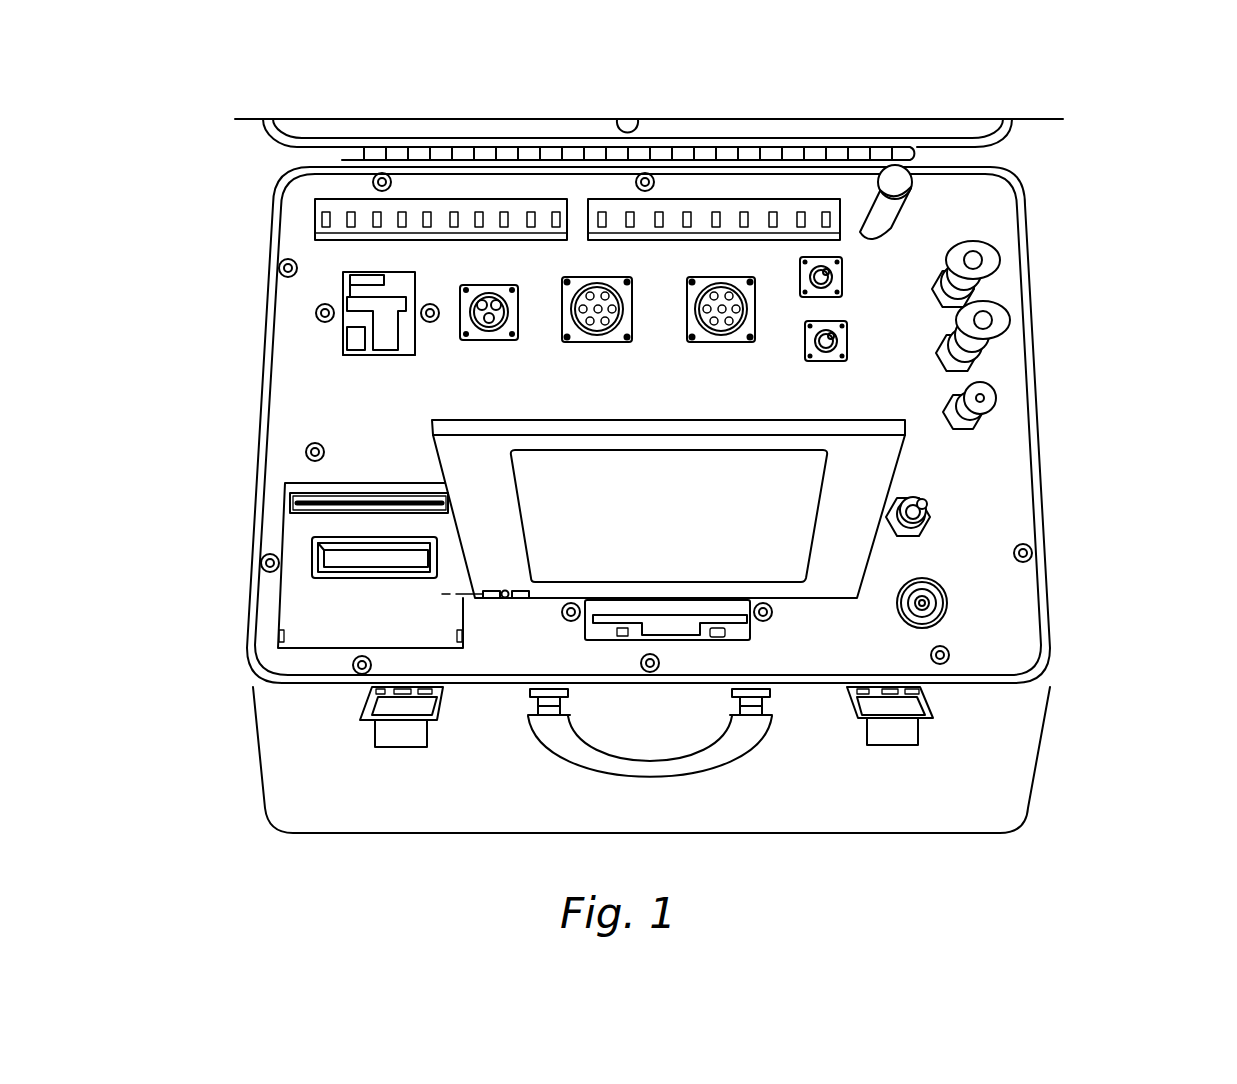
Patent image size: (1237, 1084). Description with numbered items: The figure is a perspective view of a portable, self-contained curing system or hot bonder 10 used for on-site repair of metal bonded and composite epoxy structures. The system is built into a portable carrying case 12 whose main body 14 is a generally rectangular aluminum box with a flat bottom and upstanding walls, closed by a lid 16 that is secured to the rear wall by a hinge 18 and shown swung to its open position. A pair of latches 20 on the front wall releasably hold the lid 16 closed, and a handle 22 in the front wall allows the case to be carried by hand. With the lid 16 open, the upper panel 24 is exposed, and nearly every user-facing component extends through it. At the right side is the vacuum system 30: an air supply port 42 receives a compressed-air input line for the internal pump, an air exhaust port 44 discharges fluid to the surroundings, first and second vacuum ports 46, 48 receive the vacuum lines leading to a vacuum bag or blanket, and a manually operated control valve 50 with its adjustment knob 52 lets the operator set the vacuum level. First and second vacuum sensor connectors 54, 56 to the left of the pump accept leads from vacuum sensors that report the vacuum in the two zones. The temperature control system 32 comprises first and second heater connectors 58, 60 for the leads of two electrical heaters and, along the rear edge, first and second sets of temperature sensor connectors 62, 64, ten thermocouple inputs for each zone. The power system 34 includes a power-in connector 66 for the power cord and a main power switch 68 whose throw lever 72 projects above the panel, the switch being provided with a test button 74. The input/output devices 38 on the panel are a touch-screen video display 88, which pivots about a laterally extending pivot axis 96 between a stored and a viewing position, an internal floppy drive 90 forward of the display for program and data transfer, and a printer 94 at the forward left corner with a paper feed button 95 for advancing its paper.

The portable curing system 10 is at (1170, 248).
The portable carrying case 12 is at (1058, 718).
The main body 14 is at (1032, 792).
The lid 16 is at (1000, 134).
The hinge 18 is at (977, 160).
The latches 20 is at (428, 740).
The handle 22 is at (750, 765).
The upper panel 24 is at (1010, 618).
The vacuum system 30 is at (1002, 296).
The temperature control system 32 is at (306, 216).
The power system 34 is at (334, 331).
The input/output devices 38 is at (488, 602).
The air supply port 42 is at (930, 534).
The air exhaust port 44 is at (893, 225).
The first vacuum port 46 is at (1000, 345).
The second vacuum port 48 is at (1003, 270).
The control valve 50 is at (985, 422).
The adjustment knob 52 is at (995, 400).
The first vacuum sensor connector 54 is at (851, 348).
The second vacuum sensor connector 56 is at (845, 283).
The first heater connector 58 is at (633, 312).
The second heater connector 60 is at (756, 315).
The first set of temperature sensor connectors 62 is at (517, 198).
The second set of temperature sensor connectors 64 is at (710, 198).
The power-in connector 66 is at (474, 341).
The main power switch 68 is at (340, 346).
The throw lever 72 is at (346, 292).
The test button 74 is at (341, 352).
The video display 88 is at (512, 602).
The internal floppy drive 90 is at (680, 648).
The printer 94 is at (282, 538).
The paper feed button 95 is at (300, 455).
The pivot axis 96 is at (891, 597).